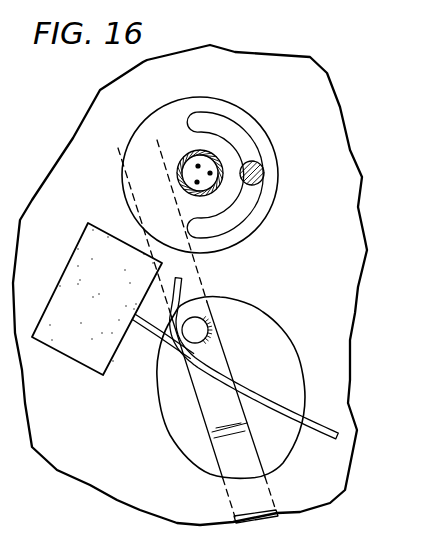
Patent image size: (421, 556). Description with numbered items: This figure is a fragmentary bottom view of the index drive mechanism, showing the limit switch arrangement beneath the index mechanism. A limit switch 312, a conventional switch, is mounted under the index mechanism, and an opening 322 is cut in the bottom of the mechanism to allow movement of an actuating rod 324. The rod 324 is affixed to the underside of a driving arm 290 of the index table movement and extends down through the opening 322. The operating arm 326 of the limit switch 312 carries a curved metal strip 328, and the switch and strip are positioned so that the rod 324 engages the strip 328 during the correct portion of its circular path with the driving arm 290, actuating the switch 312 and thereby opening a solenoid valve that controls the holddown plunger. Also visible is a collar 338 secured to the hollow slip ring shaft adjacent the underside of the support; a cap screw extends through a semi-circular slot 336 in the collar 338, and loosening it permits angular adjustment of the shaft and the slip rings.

The driving arm 290 is at (222, 448).
The limit switch 312 is at (80, 365).
The opening 322 is at (267, 310).
The actuating rod 324 is at (208, 332).
The operating arm 326 is at (143, 323).
The curved metal strip 328 is at (242, 397).
The semi-circular slot 336 is at (252, 212).
The collar 338 is at (252, 120).